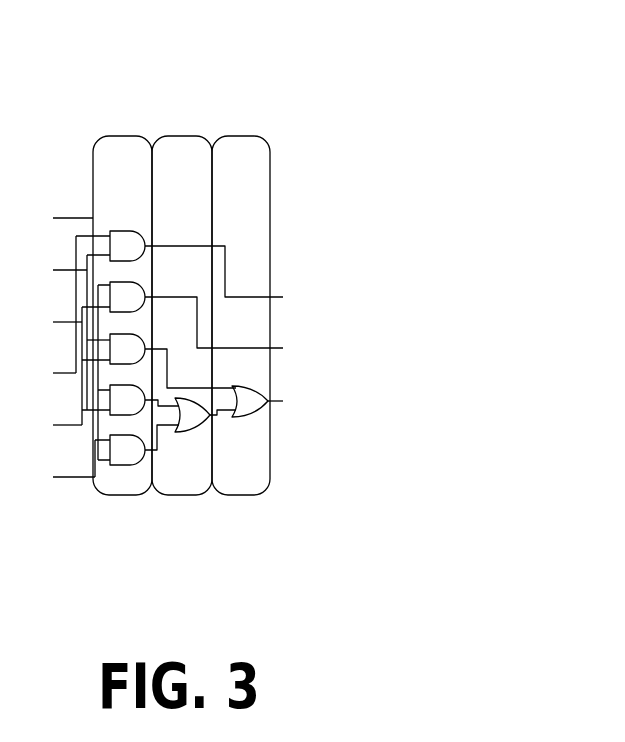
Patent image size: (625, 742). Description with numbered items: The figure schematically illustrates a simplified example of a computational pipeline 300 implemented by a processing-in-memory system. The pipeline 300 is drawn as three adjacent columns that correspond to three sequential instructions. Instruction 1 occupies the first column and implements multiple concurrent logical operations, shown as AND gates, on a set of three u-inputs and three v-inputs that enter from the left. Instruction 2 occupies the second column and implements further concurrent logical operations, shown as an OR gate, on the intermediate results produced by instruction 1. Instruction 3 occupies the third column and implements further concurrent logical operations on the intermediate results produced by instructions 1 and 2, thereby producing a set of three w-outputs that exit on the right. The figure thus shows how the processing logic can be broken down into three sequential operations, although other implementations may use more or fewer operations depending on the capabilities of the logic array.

The computational pipeline 300 is at (206, 255).
The instruction 1 is at (122, 315).
The instruction 2 is at (182, 315).
The instruction 3 is at (241, 315).